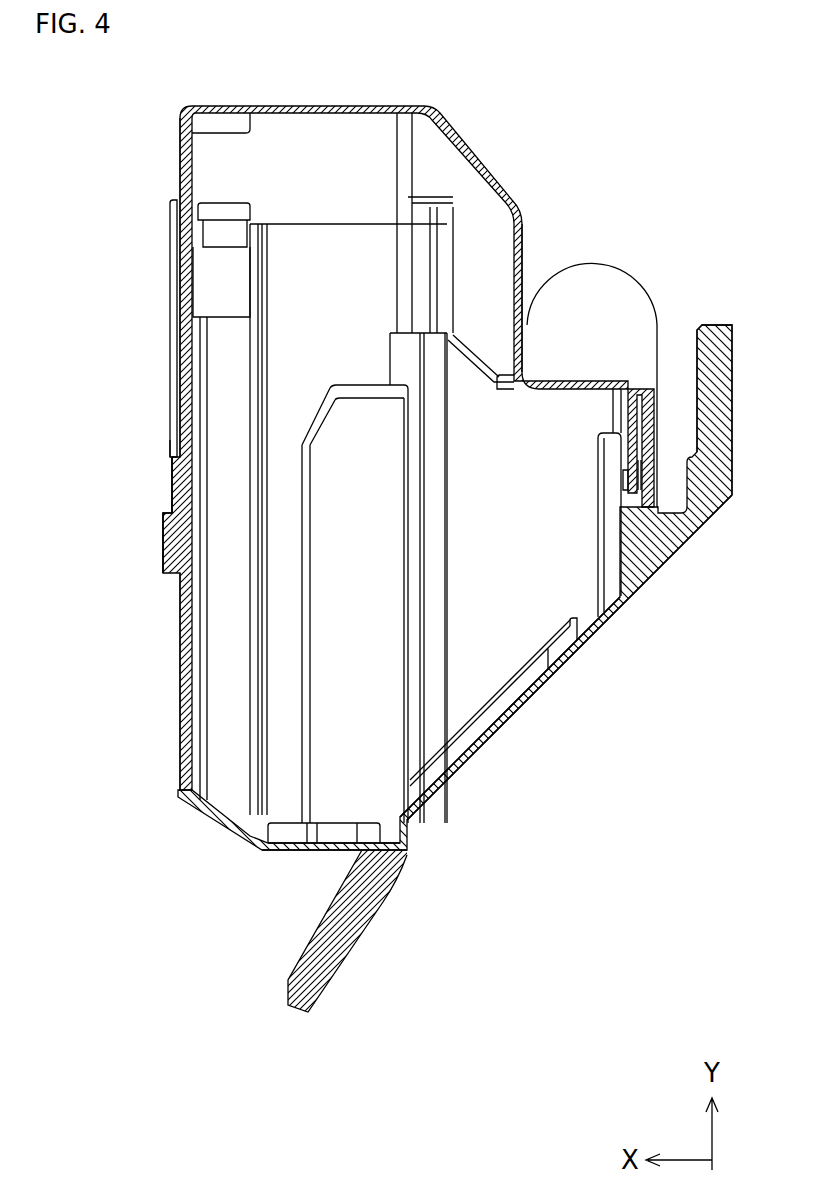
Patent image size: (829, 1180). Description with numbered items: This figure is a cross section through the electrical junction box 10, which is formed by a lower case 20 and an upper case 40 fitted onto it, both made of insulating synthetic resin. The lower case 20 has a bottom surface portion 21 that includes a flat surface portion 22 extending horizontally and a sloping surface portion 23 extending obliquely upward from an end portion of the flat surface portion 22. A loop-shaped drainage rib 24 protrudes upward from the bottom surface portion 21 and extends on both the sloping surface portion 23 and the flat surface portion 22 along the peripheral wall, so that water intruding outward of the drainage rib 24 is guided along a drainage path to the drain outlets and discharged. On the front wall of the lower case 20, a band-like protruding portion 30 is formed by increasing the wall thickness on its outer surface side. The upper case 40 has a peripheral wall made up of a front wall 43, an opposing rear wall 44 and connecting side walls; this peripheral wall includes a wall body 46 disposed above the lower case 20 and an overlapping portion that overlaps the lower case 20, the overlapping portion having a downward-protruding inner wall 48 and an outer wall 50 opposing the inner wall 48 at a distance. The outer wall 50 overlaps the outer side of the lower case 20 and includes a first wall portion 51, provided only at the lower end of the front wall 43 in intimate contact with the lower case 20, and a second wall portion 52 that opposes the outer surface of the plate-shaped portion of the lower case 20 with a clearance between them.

The electrical junction box 10 is at (633, 206).
The lower case 20 is at (180, 752).
The bottom surface portion 21 is at (596, 748).
The flat surface portion 22 is at (343, 843).
The sloping surface portion 23 is at (515, 713).
The drainage rib 24 is at (577, 641).
The protruding portion 30 is at (175, 573).
The upper case 40 is at (265, 106).
The front wall 43 is at (180, 172).
The rear wall 44 is at (516, 224).
The wall body 46 is at (177, 343).
The inner wall 48 is at (178, 424).
The outer wall 50 is at (143, 512).
The first wall portion 51 is at (163, 547).
The second wall portion 52 is at (172, 482).